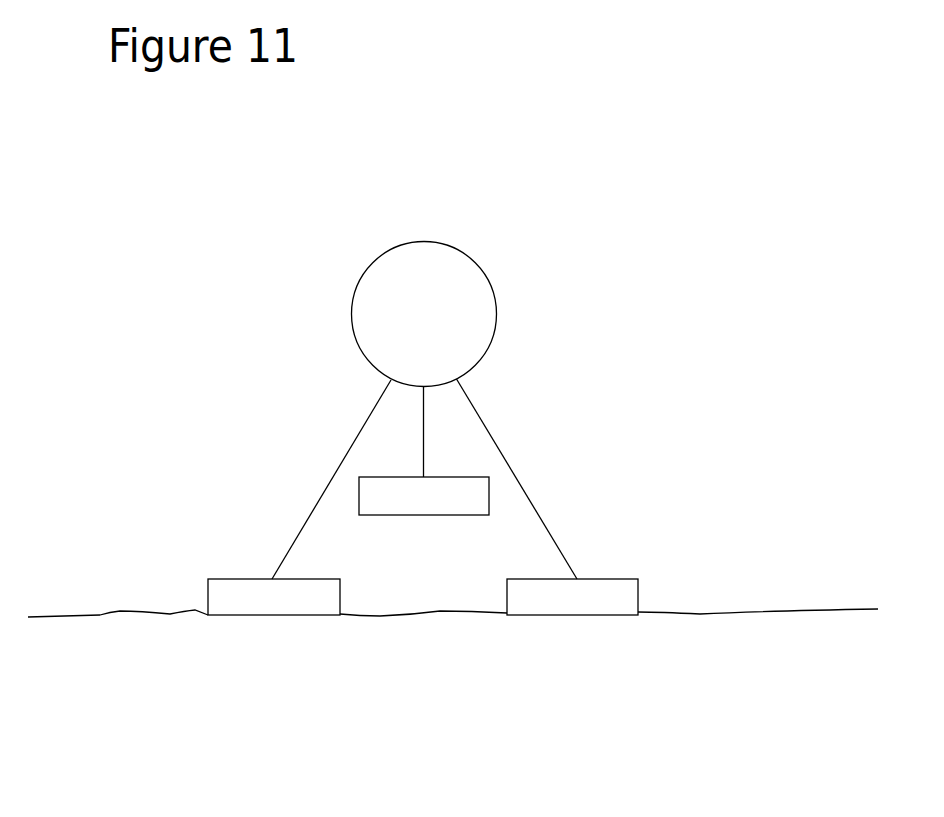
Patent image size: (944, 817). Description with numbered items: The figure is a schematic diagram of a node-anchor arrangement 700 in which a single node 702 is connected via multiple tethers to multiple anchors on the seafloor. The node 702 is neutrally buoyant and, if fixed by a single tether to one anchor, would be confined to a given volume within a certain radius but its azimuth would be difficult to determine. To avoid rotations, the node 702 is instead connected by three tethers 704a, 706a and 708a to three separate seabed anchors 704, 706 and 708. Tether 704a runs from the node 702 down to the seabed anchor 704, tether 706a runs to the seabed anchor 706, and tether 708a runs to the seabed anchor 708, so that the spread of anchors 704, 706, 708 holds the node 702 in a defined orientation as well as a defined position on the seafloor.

The node-anchor arrangement 700 is at (444, 133).
The node 702 is at (467, 277).
The seabed anchor 704 is at (292, 603).
The tether 704a is at (335, 470).
The seabed anchor 706 is at (405, 515).
The tether 706a is at (425, 427).
The seabed anchor 708 is at (583, 603).
The tether 708a is at (530, 505).